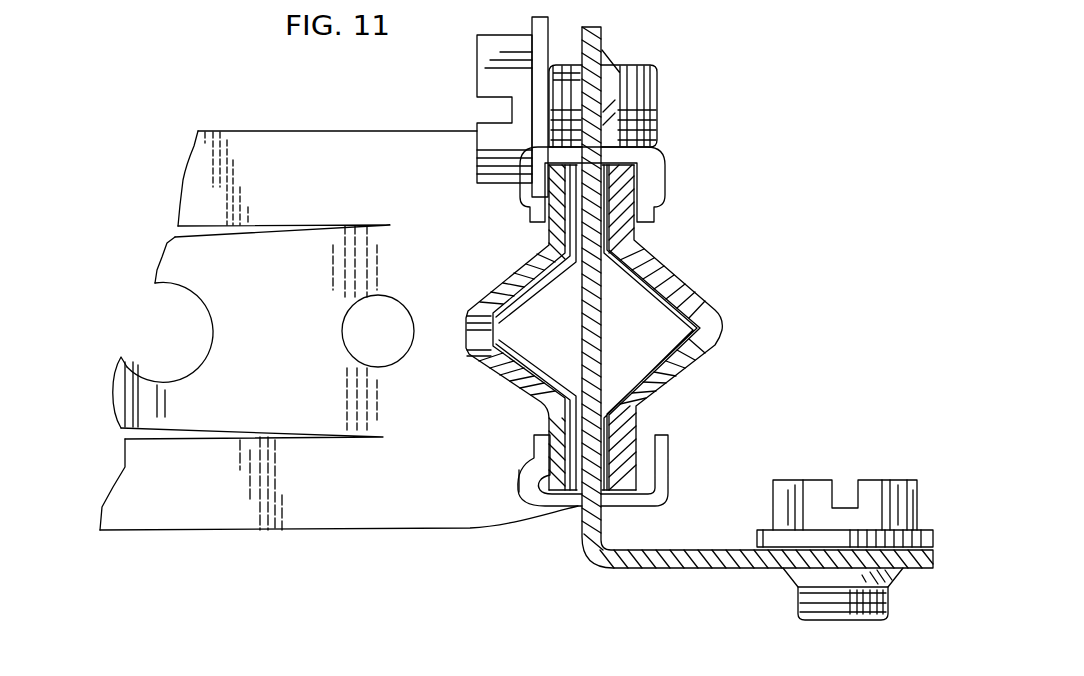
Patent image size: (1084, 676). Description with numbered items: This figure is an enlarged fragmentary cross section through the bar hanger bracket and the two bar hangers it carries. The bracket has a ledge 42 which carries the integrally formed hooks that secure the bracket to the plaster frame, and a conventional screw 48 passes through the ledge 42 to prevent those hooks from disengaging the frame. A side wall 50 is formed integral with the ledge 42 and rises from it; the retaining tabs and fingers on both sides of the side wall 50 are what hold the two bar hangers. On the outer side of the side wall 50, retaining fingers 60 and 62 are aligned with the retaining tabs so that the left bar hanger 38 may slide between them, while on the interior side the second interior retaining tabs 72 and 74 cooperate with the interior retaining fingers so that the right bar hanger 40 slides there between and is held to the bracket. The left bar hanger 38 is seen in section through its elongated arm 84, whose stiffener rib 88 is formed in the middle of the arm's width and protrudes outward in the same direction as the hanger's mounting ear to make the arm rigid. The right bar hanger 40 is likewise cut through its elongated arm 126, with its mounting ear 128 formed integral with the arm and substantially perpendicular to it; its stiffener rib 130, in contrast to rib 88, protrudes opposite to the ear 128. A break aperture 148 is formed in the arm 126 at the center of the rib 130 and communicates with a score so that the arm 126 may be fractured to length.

The mounting ear 128 is at (312, 140).
The second interior retaining tab 72 is at (657, 170).
The retaining finger 60 is at (527, 203).
The side wall 50 is at (598, 295).
The right bar hanger 40 is at (488, 327).
The break aperture 148 is at (470, 321).
The stiffener rib 88 is at (705, 327).
The left bar hanger 38 is at (703, 365).
The stiffener rib 130 is at (497, 372).
The elongated arm 126 is at (556, 438).
The elongated arm 84 is at (630, 440).
The second interior retaining tab 74 is at (667, 450).
The retaining finger 62 is at (530, 495).
The ledge 42 is at (717, 560).
The screw 48 is at (787, 488).